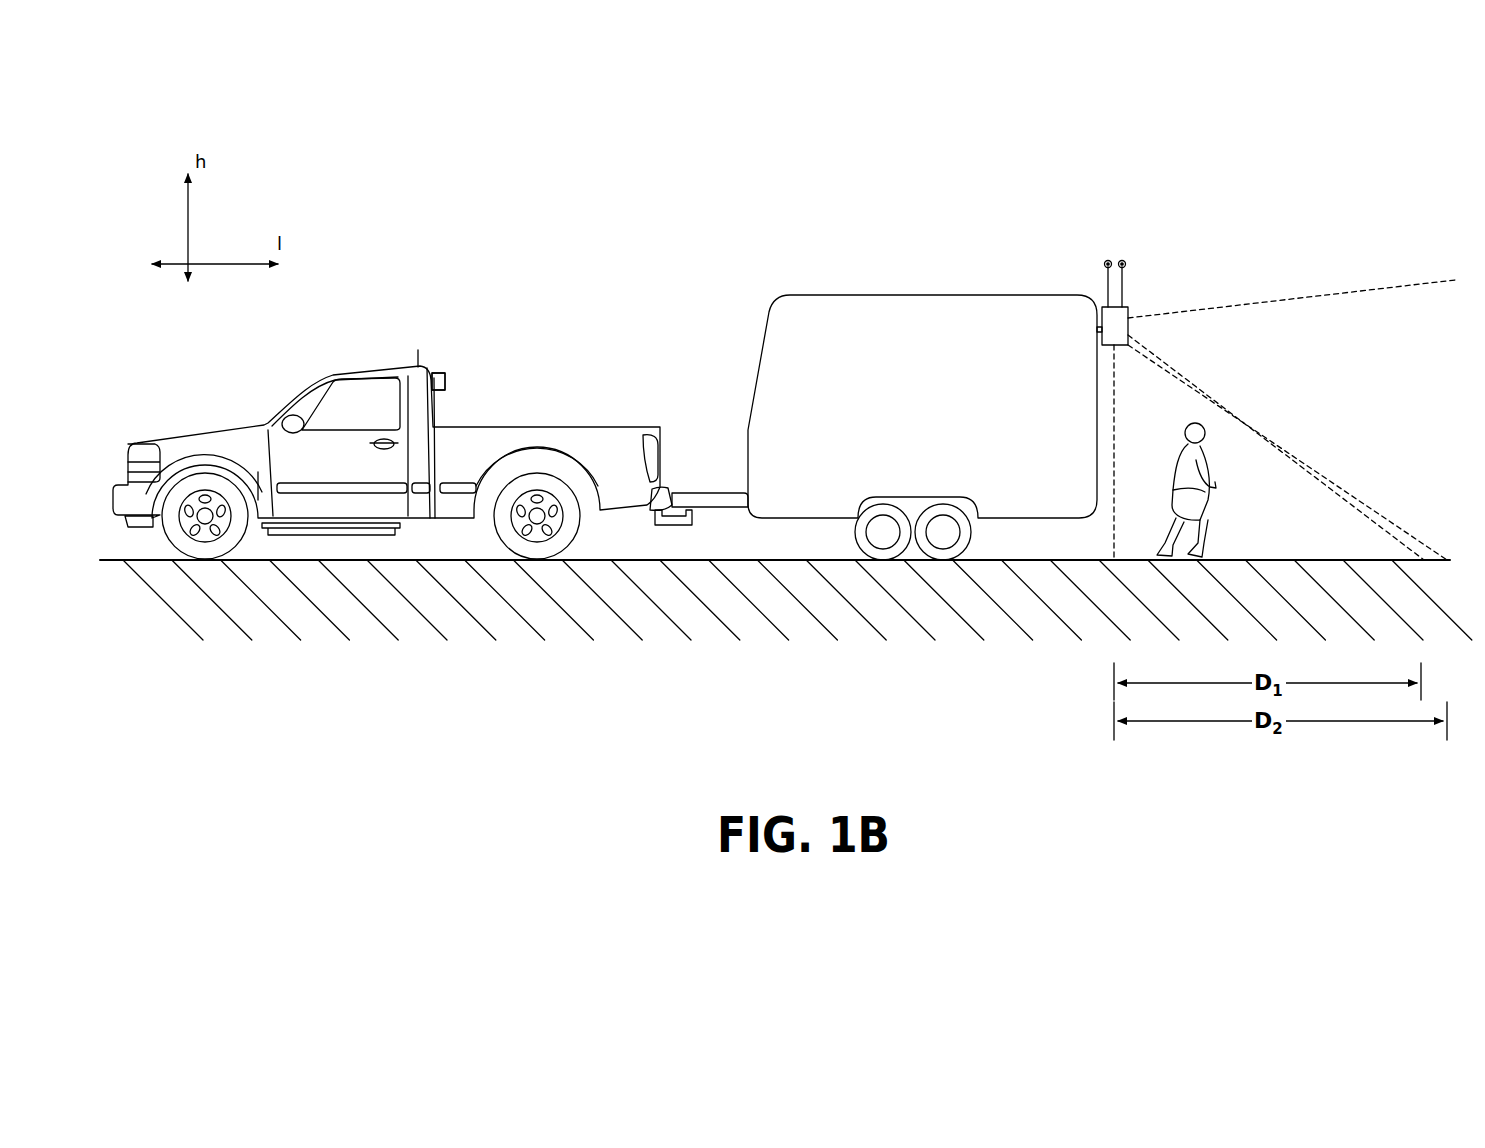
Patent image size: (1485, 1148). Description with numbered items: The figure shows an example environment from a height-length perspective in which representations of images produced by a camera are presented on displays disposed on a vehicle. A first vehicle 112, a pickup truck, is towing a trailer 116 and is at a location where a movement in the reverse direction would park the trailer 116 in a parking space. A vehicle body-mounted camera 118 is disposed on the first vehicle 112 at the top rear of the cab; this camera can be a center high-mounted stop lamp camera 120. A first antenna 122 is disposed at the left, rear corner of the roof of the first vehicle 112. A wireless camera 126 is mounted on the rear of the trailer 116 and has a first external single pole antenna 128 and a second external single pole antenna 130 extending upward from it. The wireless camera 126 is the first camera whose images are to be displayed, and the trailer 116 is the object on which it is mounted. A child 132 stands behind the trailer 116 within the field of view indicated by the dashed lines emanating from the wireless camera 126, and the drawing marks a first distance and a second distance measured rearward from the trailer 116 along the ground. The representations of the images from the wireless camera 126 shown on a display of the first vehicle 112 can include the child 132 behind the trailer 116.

The first vehicle 112 is at (207, 423).
The trailer 116 is at (930, 295).
The vehicle body-mounted camera 118 is at (447, 383).
The center high-mounted stop lamp camera 120 is at (438, 381).
The first antenna 122 is at (422, 358).
The wireless camera 126 is at (1118, 327).
The first external single pole antenna 128 is at (1104, 283).
The second external single pole antenna 130 is at (1125, 285).
The child 132 is at (1207, 458).